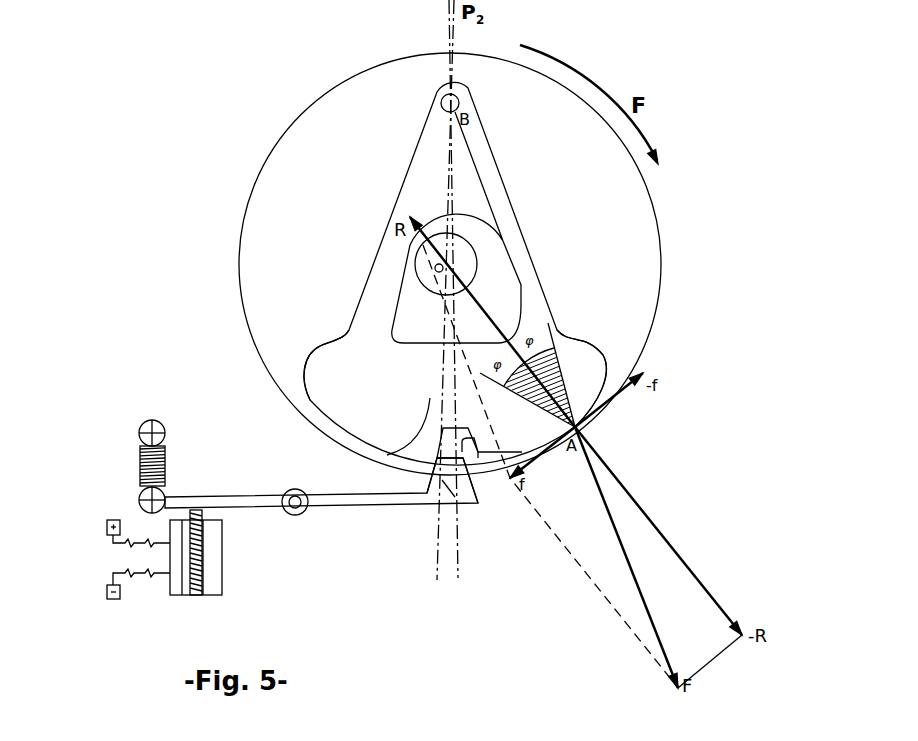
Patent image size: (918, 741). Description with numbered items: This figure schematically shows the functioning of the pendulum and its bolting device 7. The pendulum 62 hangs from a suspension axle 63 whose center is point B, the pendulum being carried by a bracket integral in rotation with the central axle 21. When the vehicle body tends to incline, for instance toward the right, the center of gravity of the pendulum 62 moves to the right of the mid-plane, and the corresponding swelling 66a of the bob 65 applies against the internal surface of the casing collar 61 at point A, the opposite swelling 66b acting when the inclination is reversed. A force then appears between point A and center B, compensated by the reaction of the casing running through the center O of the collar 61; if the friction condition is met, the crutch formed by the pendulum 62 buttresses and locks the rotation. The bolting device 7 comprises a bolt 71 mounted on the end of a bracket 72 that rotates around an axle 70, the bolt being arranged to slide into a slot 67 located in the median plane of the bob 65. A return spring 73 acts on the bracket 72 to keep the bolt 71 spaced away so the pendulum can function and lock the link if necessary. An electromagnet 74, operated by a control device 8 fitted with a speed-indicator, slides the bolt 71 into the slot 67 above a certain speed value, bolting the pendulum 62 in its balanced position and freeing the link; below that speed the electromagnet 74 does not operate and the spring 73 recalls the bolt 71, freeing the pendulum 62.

The bolting device 7 is at (333, 517).
The control device 8 is at (105, 553).
The central axle 21 is at (479, 258).
The casing collar 61 is at (661, 250).
The pendulum 62 is at (534, 291).
The suspension axle 63 is at (441, 97).
The bob 65 is at (387, 455).
The swelling 66a is at (609, 378).
The swelling 66b is at (330, 436).
The slot 67 is at (475, 466).
The axle 70 is at (289, 516).
The bolt 71 is at (445, 483).
The bracket 72 is at (376, 505).
The return spring 73 is at (165, 468).
The electromagnet 74 is at (207, 540).